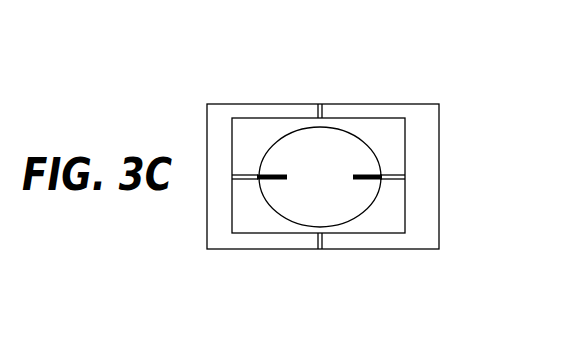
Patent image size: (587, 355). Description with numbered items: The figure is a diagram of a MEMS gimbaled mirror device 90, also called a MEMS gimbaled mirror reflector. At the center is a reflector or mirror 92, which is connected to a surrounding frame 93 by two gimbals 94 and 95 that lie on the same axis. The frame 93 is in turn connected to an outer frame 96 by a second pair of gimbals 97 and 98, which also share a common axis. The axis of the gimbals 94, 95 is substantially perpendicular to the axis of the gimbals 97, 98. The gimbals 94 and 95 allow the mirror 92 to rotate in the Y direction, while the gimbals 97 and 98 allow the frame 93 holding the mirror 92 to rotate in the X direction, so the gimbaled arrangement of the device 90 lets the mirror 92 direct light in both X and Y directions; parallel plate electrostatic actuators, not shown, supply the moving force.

The MEMS gimbaled mirror device 90 is at (280, 66).
The mirror 92 is at (348, 221).
The frame 93 is at (405, 197).
The gimbal 94 is at (258, 175).
The gimbal 95 is at (387, 174).
The outer frame 96 is at (439, 170).
The gimbal 97 is at (323, 110).
The gimbal 98 is at (325, 240).